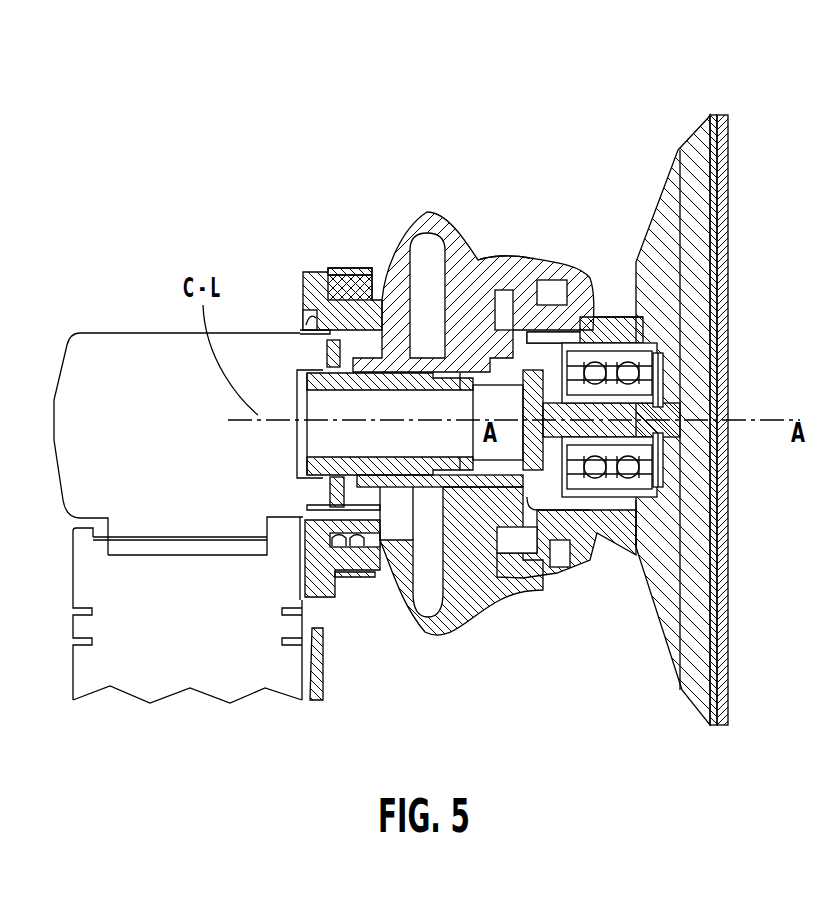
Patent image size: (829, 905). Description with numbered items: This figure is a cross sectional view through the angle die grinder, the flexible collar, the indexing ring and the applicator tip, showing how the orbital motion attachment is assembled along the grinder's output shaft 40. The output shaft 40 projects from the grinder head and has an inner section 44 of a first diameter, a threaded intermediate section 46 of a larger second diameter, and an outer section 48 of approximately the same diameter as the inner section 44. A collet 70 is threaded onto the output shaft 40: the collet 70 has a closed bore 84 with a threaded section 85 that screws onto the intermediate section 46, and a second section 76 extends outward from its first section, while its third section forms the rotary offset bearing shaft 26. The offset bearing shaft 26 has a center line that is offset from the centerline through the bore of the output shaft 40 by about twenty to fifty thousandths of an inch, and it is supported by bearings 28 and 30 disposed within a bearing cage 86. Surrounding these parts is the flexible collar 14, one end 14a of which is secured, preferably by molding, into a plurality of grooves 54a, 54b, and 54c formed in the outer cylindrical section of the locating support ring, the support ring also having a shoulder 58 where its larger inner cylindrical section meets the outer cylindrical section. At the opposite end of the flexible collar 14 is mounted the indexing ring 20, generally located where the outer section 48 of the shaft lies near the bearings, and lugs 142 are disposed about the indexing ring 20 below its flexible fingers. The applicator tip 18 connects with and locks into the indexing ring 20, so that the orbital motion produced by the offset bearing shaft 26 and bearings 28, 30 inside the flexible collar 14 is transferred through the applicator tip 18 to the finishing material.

The applicator tip 18 is at (647, 140).
The flexible collar 14 is at (432, 215).
The end of flex collar 14a is at (342, 287).
The inner section of output shaft 44 is at (368, 420).
The output shaft 40 is at (328, 403).
The closed bore 84 is at (470, 260).
The threaded intermediate section 46 is at (487, 400).
The outer section of output shaft 48 is at (550, 340).
The lug 142 is at (610, 313).
The rotary offset bearing shaft 26 is at (623, 367).
The bearing 28 is at (620, 322).
The bearing 30 is at (600, 530).
The bearing cage 86 is at (618, 503).
The indexing ring 20 is at (585, 548).
The second section of collet 76 is at (540, 515).
The collet 70 is at (485, 503).
The groove 54a is at (347, 540).
The groove 54b is at (367, 542).
The groove 54c is at (377, 545).
The threaded section 85 is at (345, 495).
The shoulder 58 is at (357, 537).